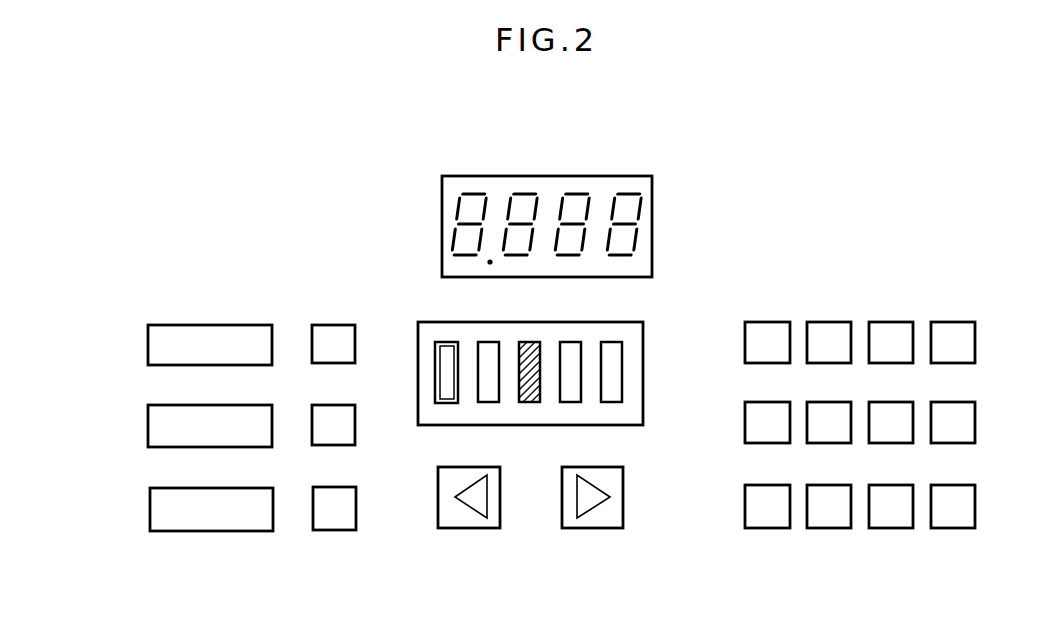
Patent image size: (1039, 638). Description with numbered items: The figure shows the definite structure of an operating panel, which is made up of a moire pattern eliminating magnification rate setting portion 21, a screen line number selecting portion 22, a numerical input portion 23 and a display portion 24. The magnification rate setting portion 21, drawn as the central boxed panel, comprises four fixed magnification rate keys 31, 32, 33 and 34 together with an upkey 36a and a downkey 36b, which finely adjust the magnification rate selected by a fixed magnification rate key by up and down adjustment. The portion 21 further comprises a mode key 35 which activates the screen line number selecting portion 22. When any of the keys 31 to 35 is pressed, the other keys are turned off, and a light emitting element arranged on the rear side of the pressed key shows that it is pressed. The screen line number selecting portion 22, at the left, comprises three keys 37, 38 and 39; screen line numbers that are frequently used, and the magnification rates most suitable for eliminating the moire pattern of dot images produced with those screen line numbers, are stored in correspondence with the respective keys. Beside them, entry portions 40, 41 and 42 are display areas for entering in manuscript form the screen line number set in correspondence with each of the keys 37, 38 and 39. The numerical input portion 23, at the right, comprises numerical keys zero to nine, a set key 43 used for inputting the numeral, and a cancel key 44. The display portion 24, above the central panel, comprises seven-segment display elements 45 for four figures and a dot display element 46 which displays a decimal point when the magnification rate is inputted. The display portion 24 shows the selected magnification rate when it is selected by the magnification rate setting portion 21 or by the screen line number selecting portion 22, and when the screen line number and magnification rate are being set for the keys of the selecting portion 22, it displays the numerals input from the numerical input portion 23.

The moire pattern eliminating magnification rate setting portion 21 is at (668, 550).
The screen line number selecting portion 22 is at (407, 552).
The numerical input portion 23 is at (1002, 548).
The display portion 24 is at (687, 290).
The fixed magnification rate key 31 is at (490, 342).
The fixed magnification rate key 32 is at (533, 342).
The fixed magnification rate key 33 is at (571, 342).
The fixed magnification rate key 34 is at (612, 342).
The mode key 35 is at (443, 342).
The upkey 36a is at (598, 465).
The downkey 36b is at (463, 466).
The key 37 is at (355, 355).
The key 38 is at (355, 435).
The key 39 is at (356, 519).
The entry portion 40 is at (148, 355).
The entry portion 41 is at (148, 435).
The entry portion 42 is at (150, 519).
The set key 43 is at (975, 336).
The cancel key 44 is at (975, 414).
The 7 segment display elements 45 is at (482, 189).
The dot display element 46 is at (489, 264).